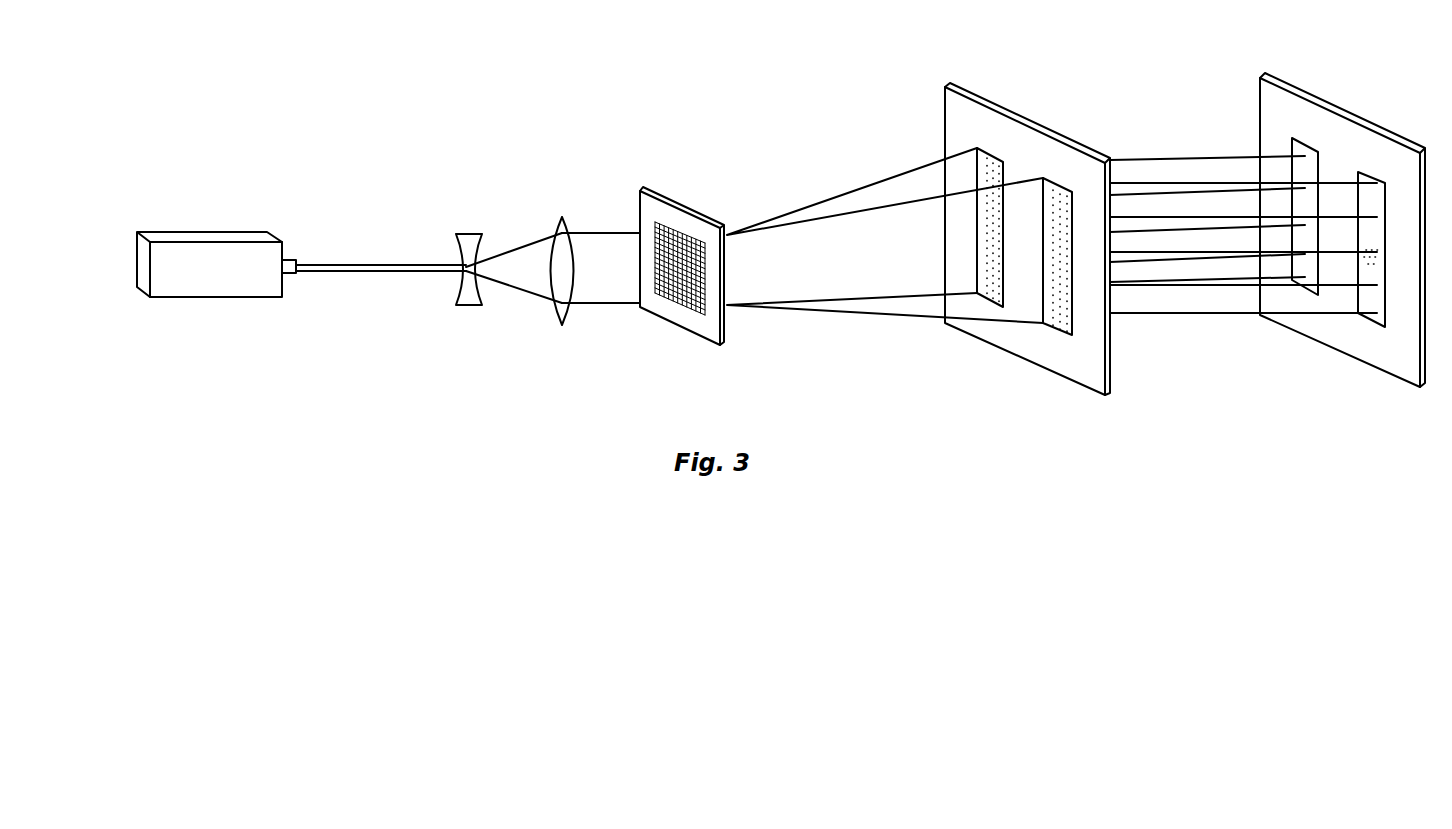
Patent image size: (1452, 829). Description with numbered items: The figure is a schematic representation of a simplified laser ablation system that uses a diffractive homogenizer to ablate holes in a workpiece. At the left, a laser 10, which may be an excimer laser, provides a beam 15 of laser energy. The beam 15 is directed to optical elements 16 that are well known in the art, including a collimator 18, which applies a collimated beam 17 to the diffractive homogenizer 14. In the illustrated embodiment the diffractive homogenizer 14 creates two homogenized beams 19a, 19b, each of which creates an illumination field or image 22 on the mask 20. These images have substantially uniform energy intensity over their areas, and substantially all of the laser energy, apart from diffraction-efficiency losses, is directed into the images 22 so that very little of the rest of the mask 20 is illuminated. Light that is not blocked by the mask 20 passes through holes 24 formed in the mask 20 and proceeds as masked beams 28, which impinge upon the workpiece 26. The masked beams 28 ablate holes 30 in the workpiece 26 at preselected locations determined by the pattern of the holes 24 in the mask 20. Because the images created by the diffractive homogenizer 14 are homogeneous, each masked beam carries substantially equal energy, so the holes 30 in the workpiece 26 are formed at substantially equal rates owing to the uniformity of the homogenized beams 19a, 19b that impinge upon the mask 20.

The laser 10 is at (243, 290).
The beam 15 is at (357, 265).
The optical elements 16 is at (469, 232).
The collimated beam 17 is at (608, 306).
The collimator 18 is at (557, 258).
The diffractive homogenizer 14 is at (658, 186).
The homogenized beam 19a is at (848, 190).
The homogenized beam 19b is at (873, 320).
The mask 20 is at (998, 106).
The illumination field or image 22 is at (1007, 172).
The holes 24 is at (983, 232).
The workpiece 26 is at (1333, 104).
The masked beams 28 is at (1180, 317).
The holes 30 is at (1372, 263).